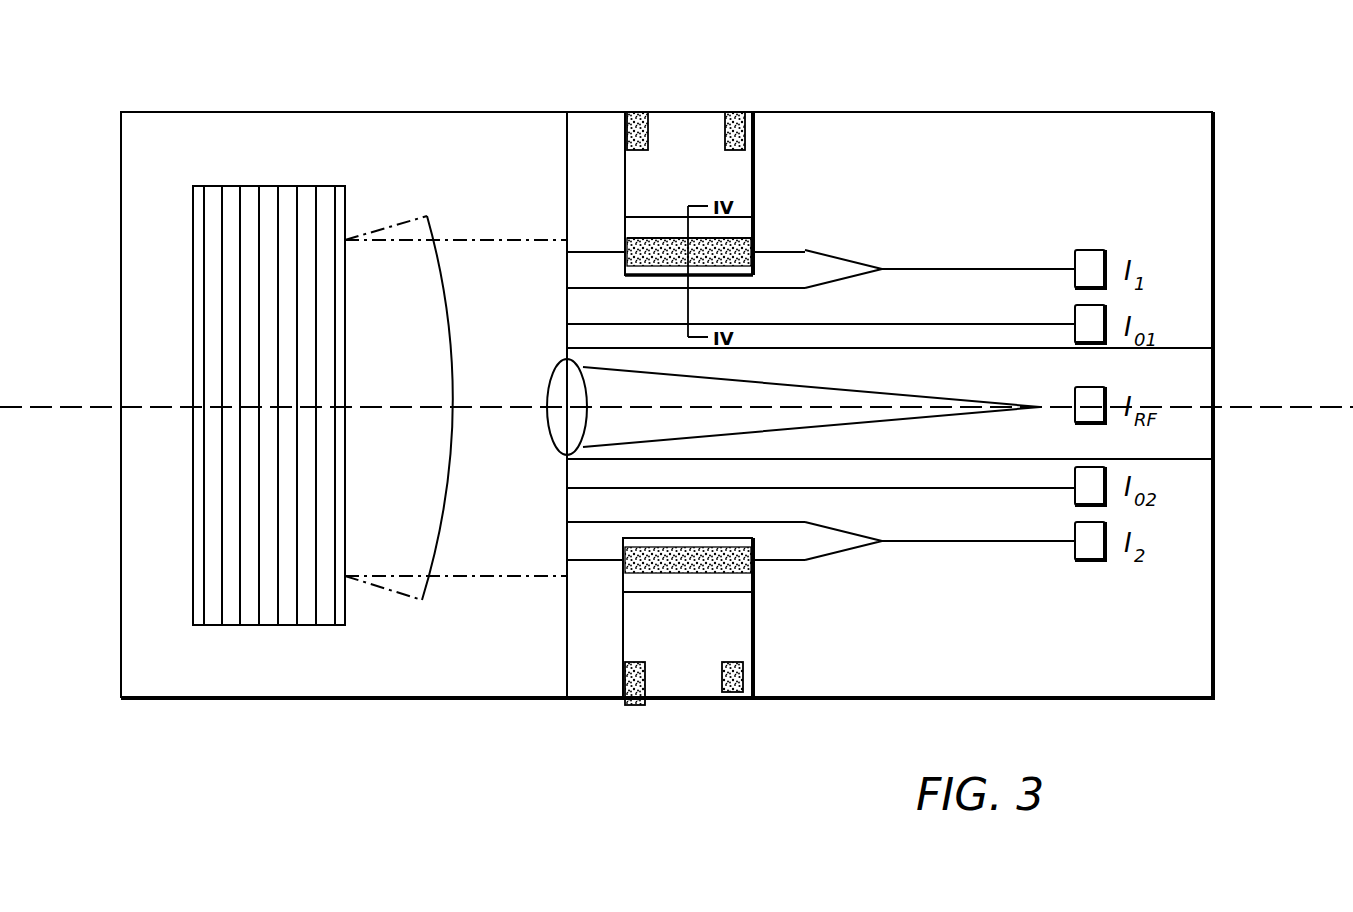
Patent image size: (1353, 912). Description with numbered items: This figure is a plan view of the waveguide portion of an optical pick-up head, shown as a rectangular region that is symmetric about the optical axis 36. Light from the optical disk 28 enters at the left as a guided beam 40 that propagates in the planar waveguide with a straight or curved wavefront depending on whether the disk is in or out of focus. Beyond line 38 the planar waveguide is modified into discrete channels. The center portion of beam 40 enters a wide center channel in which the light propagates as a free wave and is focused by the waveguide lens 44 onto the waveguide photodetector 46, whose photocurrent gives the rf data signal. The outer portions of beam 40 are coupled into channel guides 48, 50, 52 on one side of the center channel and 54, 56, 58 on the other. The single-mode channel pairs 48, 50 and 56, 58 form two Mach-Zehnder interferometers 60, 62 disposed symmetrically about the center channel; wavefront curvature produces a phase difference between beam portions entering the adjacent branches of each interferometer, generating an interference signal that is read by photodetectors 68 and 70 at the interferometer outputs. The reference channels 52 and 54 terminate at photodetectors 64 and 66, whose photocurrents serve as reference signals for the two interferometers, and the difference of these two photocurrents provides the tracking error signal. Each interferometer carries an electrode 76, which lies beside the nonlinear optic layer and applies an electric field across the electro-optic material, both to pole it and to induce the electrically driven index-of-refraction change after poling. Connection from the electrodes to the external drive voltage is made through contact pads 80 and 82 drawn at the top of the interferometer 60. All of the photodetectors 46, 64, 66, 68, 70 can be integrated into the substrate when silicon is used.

The optical disk 28 is at (193, 520).
The optical axis 36 is at (68, 405).
The line 38 is at (566, 128).
The beam 40 is at (482, 578).
The waveguide lens 44 is at (550, 420).
The waveguide photodetector 46 is at (1075, 390).
The channel guide 48 is at (596, 252).
The channel guide 50 is at (601, 288).
The reference channel 52 is at (601, 324).
The reference channel 54 is at (594, 488).
The channel guide 56 is at (594, 522).
The channel guide 58 is at (594, 560).
The M-Z interferometer 60 is at (678, 100).
The M-Z interferometer 62 is at (836, 534).
The photodetector 64 is at (1075, 308).
The photodetector 66 is at (1075, 495).
The photodetector 68 is at (1075, 250).
The photodetector 70 is at (1075, 548).
The electrode 76 is at (757, 240).
The contact pad 80 is at (640, 111).
The contact pad 82 is at (733, 111).